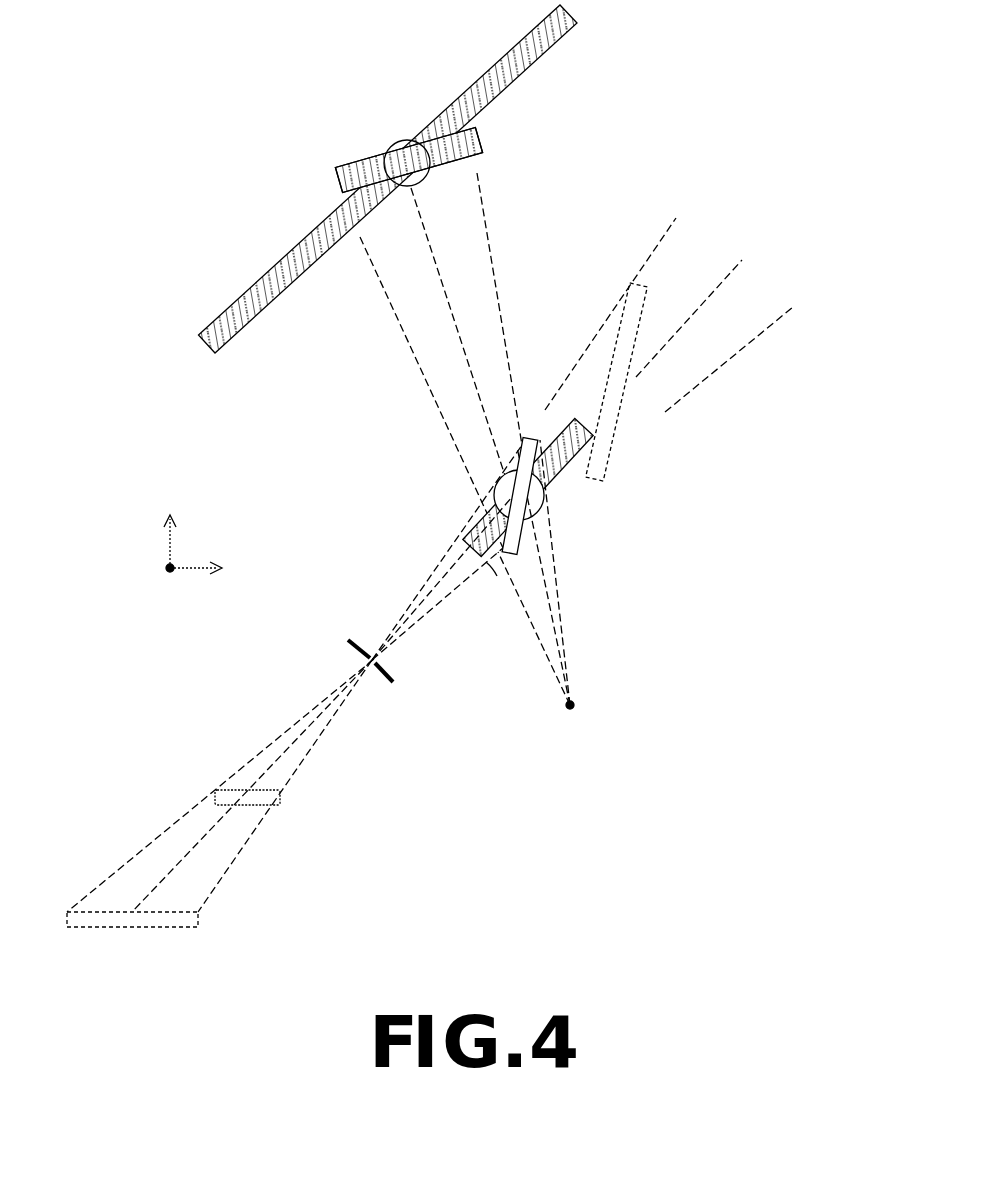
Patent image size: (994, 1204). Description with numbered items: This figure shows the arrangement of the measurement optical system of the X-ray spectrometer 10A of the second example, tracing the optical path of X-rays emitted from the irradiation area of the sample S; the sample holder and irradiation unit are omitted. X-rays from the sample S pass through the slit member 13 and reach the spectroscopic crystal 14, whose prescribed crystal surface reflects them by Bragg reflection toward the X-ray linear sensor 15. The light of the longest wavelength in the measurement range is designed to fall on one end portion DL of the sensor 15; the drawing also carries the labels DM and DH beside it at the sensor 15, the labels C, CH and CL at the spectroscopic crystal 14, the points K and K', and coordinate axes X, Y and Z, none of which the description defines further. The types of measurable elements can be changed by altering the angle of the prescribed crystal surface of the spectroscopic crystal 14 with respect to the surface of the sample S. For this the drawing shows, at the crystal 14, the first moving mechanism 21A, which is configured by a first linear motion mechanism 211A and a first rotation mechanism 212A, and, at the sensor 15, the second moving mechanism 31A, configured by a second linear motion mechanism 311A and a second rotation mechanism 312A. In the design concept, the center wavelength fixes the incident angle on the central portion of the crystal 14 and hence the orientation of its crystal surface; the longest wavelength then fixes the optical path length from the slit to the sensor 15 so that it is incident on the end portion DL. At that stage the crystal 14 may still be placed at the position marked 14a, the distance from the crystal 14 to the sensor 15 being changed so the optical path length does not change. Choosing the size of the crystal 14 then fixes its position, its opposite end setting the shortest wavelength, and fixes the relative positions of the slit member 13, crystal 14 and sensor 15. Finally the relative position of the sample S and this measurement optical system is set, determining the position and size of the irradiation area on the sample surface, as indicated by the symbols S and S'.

The X-ray spectrometer 10A is at (736, 58).
The second moving mechanism 31A is at (300, 72).
The second linear motion mechanism 311A is at (433, 118).
The second rotation mechanism 312A is at (397, 150).
The X-ray linear sensor 15 is at (483, 150).
The spectroscopic crystal 14 is at (530, 437).
The alternative position of spectroscopic crystal 14a is at (622, 395).
The first moving mechanism 21A is at (643, 498).
The first linear motion mechanism 211A is at (556, 482).
The first rotation mechanism 212A is at (548, 512).
The slit member 13 is at (395, 681).
The focal point K is at (360, 624).
The conjugate point K' is at (579, 725).
The sample S is at (268, 813).
The symbol S' is at (158, 935).
The rotation center C is at (497, 568).
The high-end reflection point CH is at (520, 444).
The low-end reflection point CL is at (470, 545).
The end portion of X-ray linear sensor DL is at (336, 166).
The middle incidence point DM is at (411, 178).
The high-end incidence point DH is at (476, 155).
The X axis X is at (204, 570).
The Y axis Y is at (169, 531).
The Z axis Z is at (162, 584).